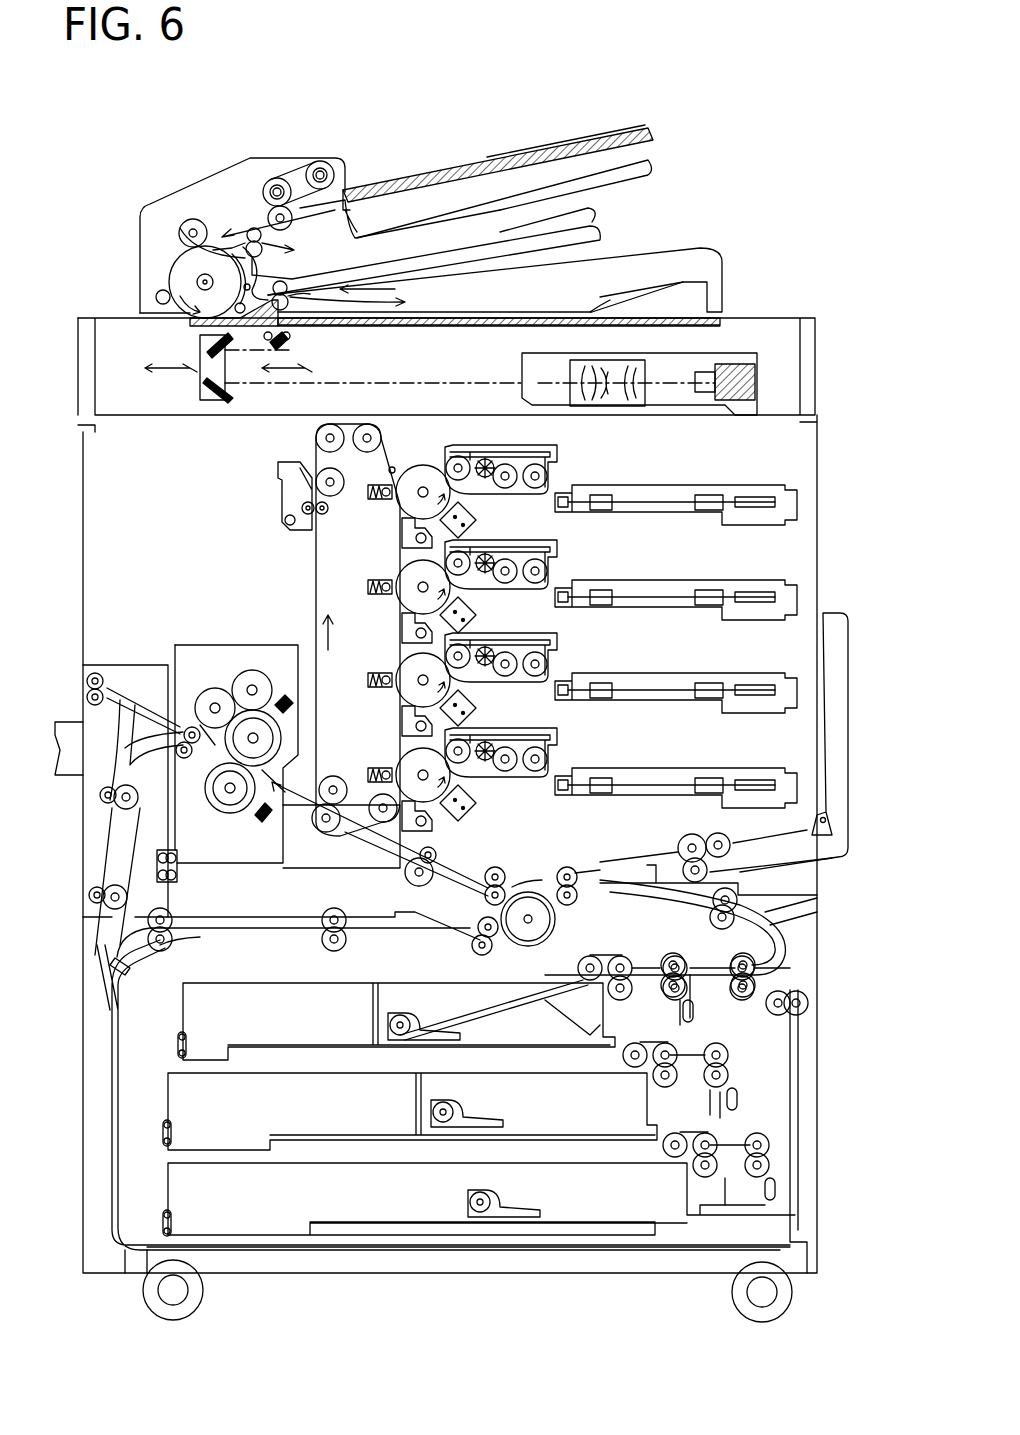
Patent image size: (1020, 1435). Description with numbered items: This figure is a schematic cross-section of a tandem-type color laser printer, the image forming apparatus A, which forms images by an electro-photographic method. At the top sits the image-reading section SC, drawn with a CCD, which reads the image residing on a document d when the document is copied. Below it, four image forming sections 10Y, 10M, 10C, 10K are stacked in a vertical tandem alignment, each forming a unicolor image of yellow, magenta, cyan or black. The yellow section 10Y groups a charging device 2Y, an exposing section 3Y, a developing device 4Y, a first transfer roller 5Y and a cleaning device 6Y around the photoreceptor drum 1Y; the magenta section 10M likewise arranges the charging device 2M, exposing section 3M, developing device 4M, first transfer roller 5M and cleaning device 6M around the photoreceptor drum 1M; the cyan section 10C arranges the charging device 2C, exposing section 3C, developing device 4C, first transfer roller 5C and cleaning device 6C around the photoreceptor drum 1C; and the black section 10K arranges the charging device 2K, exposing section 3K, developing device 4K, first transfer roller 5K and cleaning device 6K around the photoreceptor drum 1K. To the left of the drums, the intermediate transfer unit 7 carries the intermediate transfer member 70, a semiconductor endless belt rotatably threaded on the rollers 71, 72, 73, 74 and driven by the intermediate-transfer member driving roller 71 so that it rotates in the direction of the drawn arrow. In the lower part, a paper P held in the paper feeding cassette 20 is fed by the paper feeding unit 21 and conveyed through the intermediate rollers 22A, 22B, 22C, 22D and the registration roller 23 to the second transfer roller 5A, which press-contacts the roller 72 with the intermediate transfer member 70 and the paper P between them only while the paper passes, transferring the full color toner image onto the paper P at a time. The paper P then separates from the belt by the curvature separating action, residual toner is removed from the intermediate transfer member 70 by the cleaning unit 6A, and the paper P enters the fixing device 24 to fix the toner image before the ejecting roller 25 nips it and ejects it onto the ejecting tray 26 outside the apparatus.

The document d is at (555, 140).
The image-reading section SC is at (662, 231).
The CCD image sensor CCD is at (730, 355).
The image forming apparatus A is at (843, 506).
The intermediate transfer unit 7 is at (282, 561).
The intermediate transfer member 70 is at (316, 585).
The intermediate-transfer member driving roller 71 is at (316, 438).
The roller 72 is at (330, 805).
The roller 73 is at (383, 826).
The roller 74 is at (367, 438).
The cleaning unit 6A is at (278, 497).
The second transfer roller 5A is at (330, 836).
The photoreceptor drum 1Y is at (428, 465).
The photoreceptor drum 1M is at (396, 585).
The photoreceptor drum 1C is at (396, 678).
The photoreceptor drum 1K is at (396, 765).
The charging device 2Y is at (476, 518).
The charging device 2M is at (476, 613).
The charging device 2C is at (476, 706).
The charging device 2K is at (476, 801).
The exposing section 3Y is at (695, 525).
The exposing section 3M is at (693, 620).
The exposing section 3C is at (757, 673).
The exposing section 3K is at (697, 768).
The developing device 4Y is at (485, 445).
The developing device 4M is at (530, 533).
The developing device 4C is at (532, 628).
The developing device 4K is at (534, 722).
The first transfer roller 5Y is at (370, 505).
The first transfer roller 5M is at (375, 599).
The first transfer roller 5C is at (368, 688).
The first transfer roller 5K is at (368, 783).
The cleaning device 6Y is at (402, 545).
The cleaning device 6M is at (402, 640).
The cleaning device 6C is at (402, 732).
The cleaning device 6K is at (432, 826).
The image forming section 10Y is at (572, 460).
The image forming section 10M is at (654, 564).
The image forming section 10C is at (572, 648).
The image forming section 10K is at (572, 743).
The paper feeding cassette 20 is at (262, 983).
The paper feeding unit 21 is at (843, 1051).
The intermediate roller 22A is at (745, 955).
The intermediate roller 22B is at (712, 917).
The intermediate roller 22C is at (580, 898).
The intermediate roller 22D is at (483, 878).
The registration roller 23 is at (433, 886).
The fixing device 24 is at (213, 660).
The ejecting roller 25 is at (98, 672).
The sheet ejection tray 26 is at (68, 740).
The paper P is at (505, 1005).